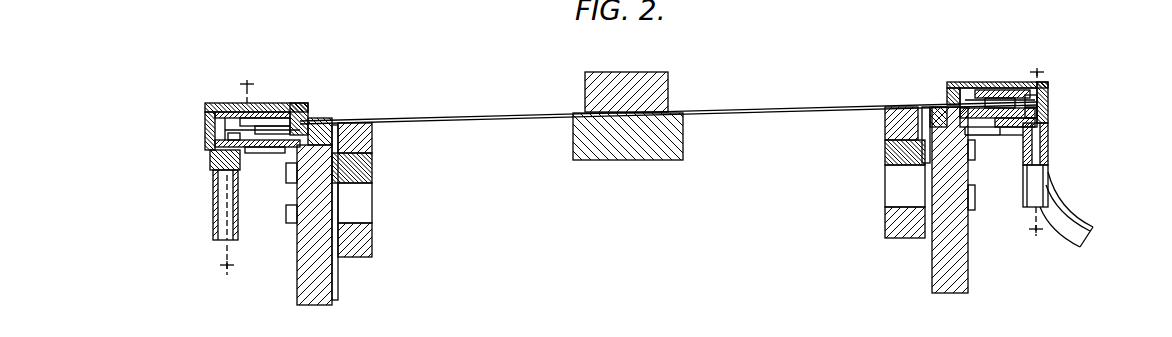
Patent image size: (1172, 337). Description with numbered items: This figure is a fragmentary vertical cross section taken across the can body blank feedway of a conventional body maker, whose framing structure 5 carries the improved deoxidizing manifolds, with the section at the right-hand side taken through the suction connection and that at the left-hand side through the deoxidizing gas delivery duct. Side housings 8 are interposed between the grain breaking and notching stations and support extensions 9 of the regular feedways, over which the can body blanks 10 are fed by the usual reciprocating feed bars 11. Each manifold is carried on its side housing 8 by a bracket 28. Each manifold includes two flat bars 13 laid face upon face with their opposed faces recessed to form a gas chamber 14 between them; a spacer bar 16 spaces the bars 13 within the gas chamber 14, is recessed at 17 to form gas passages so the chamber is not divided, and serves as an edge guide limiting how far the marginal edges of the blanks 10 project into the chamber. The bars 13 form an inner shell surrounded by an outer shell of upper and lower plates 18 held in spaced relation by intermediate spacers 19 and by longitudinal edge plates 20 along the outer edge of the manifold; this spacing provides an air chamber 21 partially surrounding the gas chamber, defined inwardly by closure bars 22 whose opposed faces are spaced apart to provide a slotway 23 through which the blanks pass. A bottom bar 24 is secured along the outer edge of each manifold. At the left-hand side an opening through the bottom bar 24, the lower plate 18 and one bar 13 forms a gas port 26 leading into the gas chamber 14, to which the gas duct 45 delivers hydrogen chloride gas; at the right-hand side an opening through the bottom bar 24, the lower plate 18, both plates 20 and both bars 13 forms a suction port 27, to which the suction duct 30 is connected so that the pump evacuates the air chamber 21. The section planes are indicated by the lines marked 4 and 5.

The section line 4 is at (237, 178).
The body maker framing structure 5 is at (1036, 153).
The side housing 8 is at (337, 272).
The feedway extension 9 is at (334, 130).
The can body blank 10 is at (444, 118).
The reciprocating feed bar 11 is at (367, 140).
The flat bar 13 is at (1050, 100).
The gas chamber 14 is at (262, 108).
The spacer bar 16 is at (988, 107).
The recess 17 is at (985, 135).
The plate 18 is at (228, 103).
The intermediate spacer 19 is at (268, 103).
The longitudinal edge plate 20 is at (207, 110).
The air chamber 21 is at (256, 153).
The closure bar 22 is at (292, 110).
The slotway 23 is at (310, 120).
The bottom bar 24 is at (208, 153).
The gas port 26 is at (204, 138).
The suction port 27 is at (1050, 110).
The bracket 28 is at (288, 207).
The suction duct 30 is at (1048, 180).
The gas duct 45 is at (212, 233).